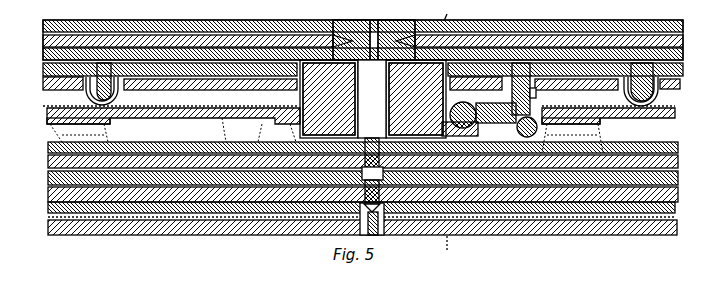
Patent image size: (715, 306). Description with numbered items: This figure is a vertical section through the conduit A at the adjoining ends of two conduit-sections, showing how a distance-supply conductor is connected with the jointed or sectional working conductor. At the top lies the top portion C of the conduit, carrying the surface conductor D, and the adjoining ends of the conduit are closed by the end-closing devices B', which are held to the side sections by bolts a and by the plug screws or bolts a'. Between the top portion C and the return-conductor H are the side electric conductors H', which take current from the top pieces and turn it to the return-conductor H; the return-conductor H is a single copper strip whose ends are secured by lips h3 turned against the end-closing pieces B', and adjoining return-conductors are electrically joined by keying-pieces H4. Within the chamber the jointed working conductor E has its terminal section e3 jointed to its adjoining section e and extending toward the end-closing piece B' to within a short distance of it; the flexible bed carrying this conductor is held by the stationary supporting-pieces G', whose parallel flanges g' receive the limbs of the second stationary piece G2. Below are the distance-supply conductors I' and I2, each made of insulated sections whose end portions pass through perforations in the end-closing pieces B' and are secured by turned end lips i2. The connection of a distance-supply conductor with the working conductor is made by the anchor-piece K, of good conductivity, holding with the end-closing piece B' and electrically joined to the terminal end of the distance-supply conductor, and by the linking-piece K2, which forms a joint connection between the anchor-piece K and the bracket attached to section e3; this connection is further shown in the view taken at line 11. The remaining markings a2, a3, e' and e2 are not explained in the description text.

The surface conductor D is at (43, 52).
The plug or other screws or bolts a' is at (363, 69).
The top portion C is at (256, 20).
The lower plate layer a2 is at (180, 56).
The bolts a is at (219, 51).
The conduit A is at (355, 30).
The line 11 is at (449, 134).
The jointed working conductor E is at (43, 70).
The section of jointed conductor e is at (367, 91).
The terminal section e3 is at (196, 89).
The hook member e' is at (378, 84).
The hook tongue e2 is at (633, 92).
The linking-piece K2 is at (512, 98).
The side electric conductor H' is at (540, 95).
The anchor-piece K is at (478, 140).
The end-closing devices B' is at (373, 99).
The block insert a3 is at (416, 99).
The turned end lips i2 is at (372, 79).
The stationary supporting-pieces G' is at (359, 119).
The parallel flanges g' is at (333, 135).
The distance-supply conductor I' is at (351, 148).
The distance-supply conductor I2 is at (48, 162).
The second stationary piece G2 is at (48, 178).
The return-conductor H is at (362, 201).
The keying-pieces H4 is at (335, 222).
The lips h3 is at (384, 208).